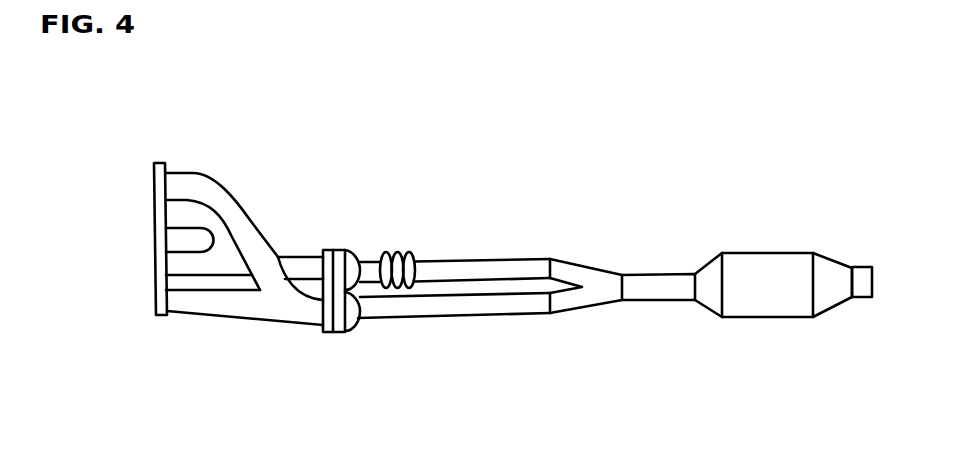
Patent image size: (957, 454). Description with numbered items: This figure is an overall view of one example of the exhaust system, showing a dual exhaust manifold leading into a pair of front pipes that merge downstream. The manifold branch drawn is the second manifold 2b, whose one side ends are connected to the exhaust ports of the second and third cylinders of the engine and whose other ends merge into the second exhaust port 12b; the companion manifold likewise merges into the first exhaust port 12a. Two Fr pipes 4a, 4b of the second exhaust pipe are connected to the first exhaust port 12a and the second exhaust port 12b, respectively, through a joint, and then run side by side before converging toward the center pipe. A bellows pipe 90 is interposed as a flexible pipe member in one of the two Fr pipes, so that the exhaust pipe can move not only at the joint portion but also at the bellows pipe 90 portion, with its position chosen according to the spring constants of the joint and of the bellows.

The second manifold 2b is at (298, 256).
The second exhaust port 12b is at (355, 255).
The first exhaust port 12a is at (352, 327).
The bellows pipe 90 is at (408, 253).
The Fr pipe 4b is at (490, 259).
The Fr pipe 4a is at (493, 318).